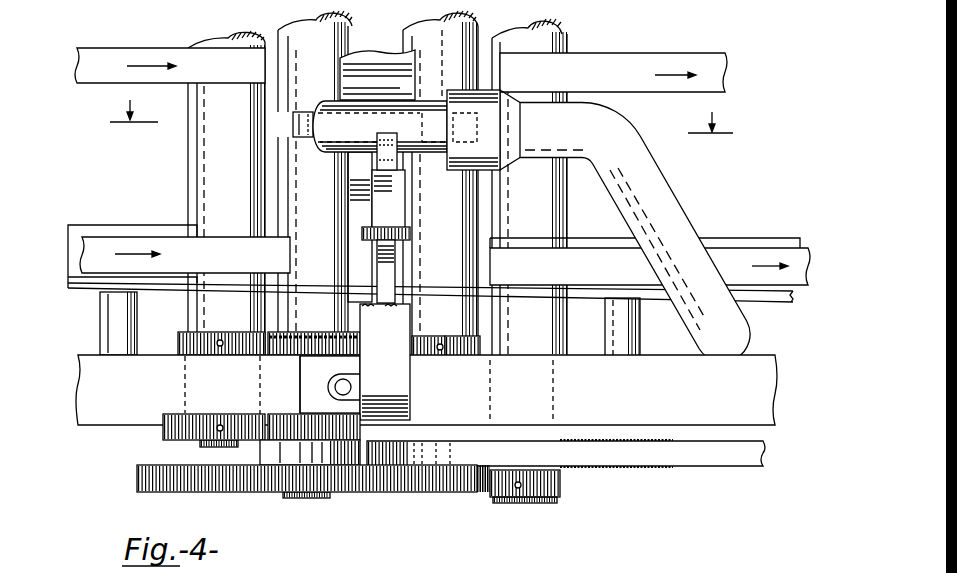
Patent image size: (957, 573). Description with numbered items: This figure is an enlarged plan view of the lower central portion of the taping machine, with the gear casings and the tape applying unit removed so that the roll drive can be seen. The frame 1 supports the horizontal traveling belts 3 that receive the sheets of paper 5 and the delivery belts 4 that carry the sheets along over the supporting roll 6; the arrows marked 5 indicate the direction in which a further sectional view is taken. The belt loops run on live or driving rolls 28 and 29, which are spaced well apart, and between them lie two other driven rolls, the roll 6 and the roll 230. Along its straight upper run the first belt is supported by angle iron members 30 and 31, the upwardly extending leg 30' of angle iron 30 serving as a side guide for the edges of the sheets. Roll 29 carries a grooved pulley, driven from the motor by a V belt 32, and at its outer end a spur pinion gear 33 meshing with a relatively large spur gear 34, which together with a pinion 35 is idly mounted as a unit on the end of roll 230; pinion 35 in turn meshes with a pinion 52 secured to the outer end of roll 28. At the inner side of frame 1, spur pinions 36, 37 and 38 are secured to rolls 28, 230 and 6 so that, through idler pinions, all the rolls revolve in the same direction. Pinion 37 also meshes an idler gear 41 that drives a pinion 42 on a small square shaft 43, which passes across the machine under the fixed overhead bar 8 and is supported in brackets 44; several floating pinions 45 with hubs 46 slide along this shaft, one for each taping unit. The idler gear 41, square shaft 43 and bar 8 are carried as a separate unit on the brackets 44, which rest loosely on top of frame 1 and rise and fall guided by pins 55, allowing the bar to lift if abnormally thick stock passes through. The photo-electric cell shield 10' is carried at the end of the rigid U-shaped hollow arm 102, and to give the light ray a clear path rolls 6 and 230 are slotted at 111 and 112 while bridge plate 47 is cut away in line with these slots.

The frame 1 is at (763, 399).
The traveling belts 3 is at (88, 64).
The delivery belts 4 is at (718, 74).
The sheets of paper 5 is at (421, 113).
The supporting roll 6 is at (420, 30).
The overhead bar 8 is at (392, 392).
The shield 10' is at (404, 112).
The live roll 28 is at (188, 141).
The live roll 29 is at (560, 207).
The angle iron 30 is at (132, 239).
The upwardly extending leg 30' is at (424, 299).
The angle iron 31 is at (790, 243).
The V belt 32 is at (728, 463).
The spur pinion gear 33 is at (556, 492).
The spur gear 34 is at (425, 493).
The pinion 35 is at (312, 426).
The spur pinion 36 is at (177, 333).
The spur pinion 37 is at (286, 334).
The spur pinion 38 is at (472, 360).
The idler gear 41 is at (297, 358).
The pinion 42 is at (438, 360).
The square shaft 43 is at (377, 259).
The brackets 44 is at (303, 398).
The pinions 45 is at (411, 236).
The hubs 46 is at (411, 199).
The bridge plate 47 is at (368, 57).
The pinion 52 is at (163, 431).
The pins 55 is at (339, 386).
The U-shaped hollow arm 102 is at (680, 211).
The slot 111 is at (470, 120).
The slot 112 is at (289, 118).
The driven roll 230 is at (282, 27).